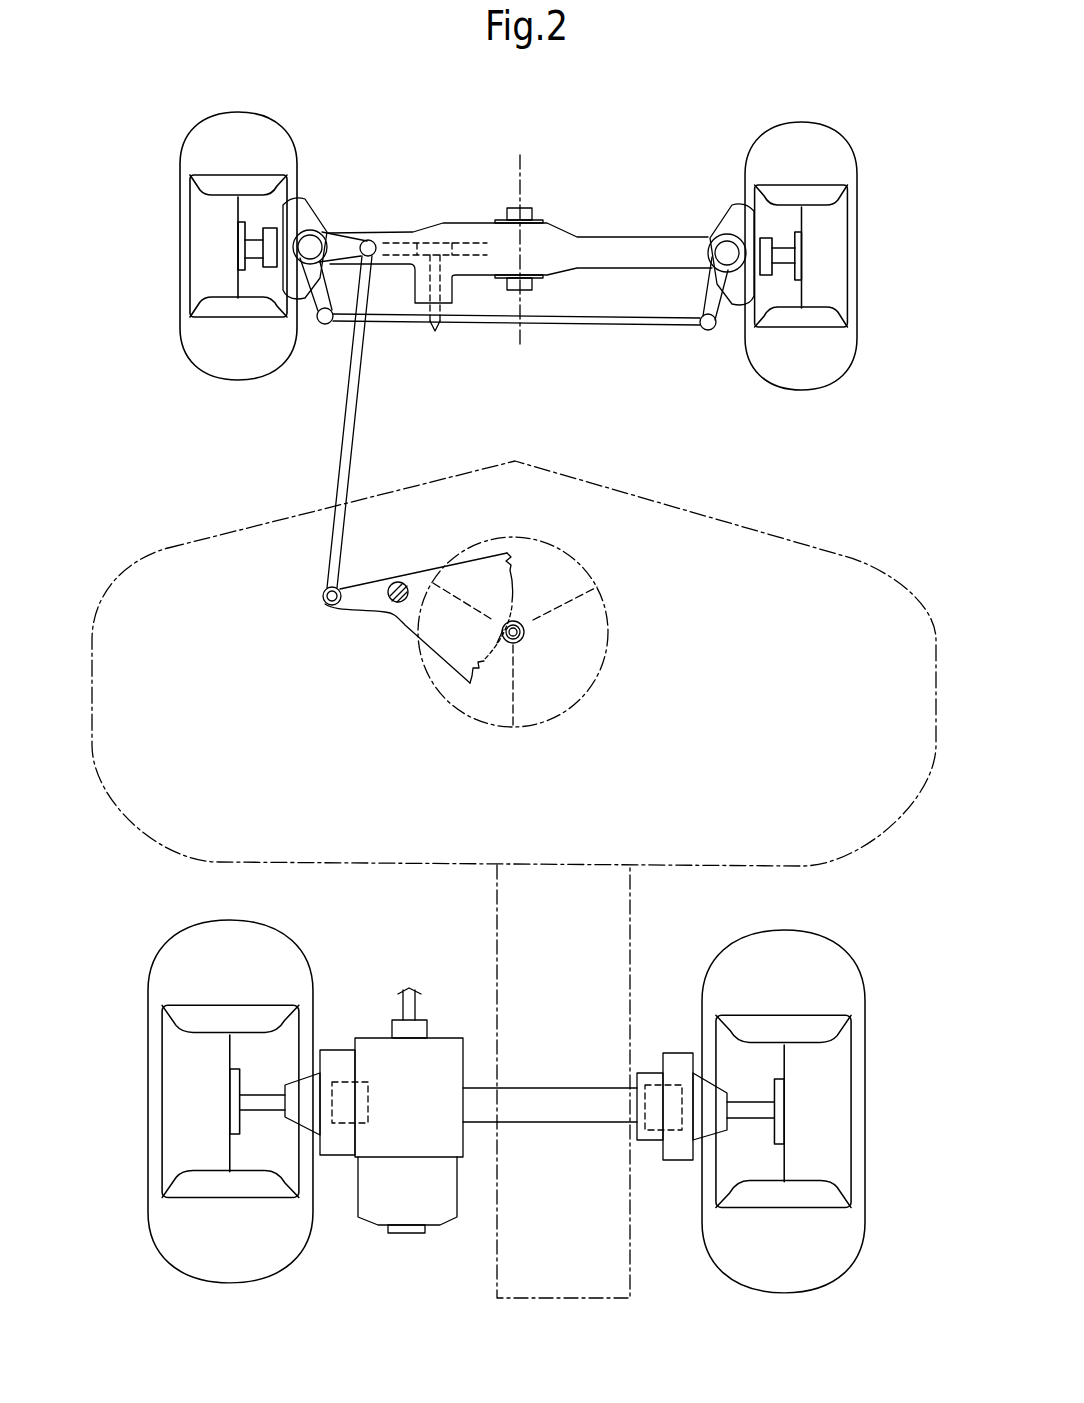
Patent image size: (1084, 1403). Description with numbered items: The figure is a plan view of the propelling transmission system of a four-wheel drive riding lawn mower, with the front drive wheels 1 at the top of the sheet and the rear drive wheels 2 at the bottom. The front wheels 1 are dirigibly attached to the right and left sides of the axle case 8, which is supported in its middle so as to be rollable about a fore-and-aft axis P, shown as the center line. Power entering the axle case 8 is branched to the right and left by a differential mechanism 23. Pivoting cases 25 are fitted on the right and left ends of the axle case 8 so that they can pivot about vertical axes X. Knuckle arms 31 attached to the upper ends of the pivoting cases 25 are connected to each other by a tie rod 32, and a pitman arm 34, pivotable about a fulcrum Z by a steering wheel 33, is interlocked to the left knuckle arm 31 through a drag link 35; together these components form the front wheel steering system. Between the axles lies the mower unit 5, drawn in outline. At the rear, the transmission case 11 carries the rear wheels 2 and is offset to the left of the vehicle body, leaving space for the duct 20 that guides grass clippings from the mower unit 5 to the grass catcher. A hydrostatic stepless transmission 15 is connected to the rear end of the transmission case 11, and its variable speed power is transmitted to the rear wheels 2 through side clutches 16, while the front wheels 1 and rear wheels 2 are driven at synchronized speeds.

The front drive wheels 1 is at (183, 140).
The rear drive wheels 2 is at (157, 1250).
The mower unit 5 is at (810, 546).
The axle case 8 is at (607, 236).
The transmission case 11 is at (447, 1038).
The hydrostatic stepless transmission 15 is at (457, 1190).
The side clutches 16 is at (348, 1124).
The duct 20 is at (497, 922).
The differential mechanism 23 is at (433, 232).
The pivoting cases 25 is at (303, 212).
The knuckle arms 31 is at (320, 298).
The tie rod 32 is at (565, 328).
The steering wheel 33 is at (608, 667).
The pitman arm 34 is at (358, 604).
The drag link 35 is at (339, 458).
The vertical axes X is at (309, 249).
The fulcrum Z is at (397, 582).
The fore-and-aft axis P is at (519, 235).